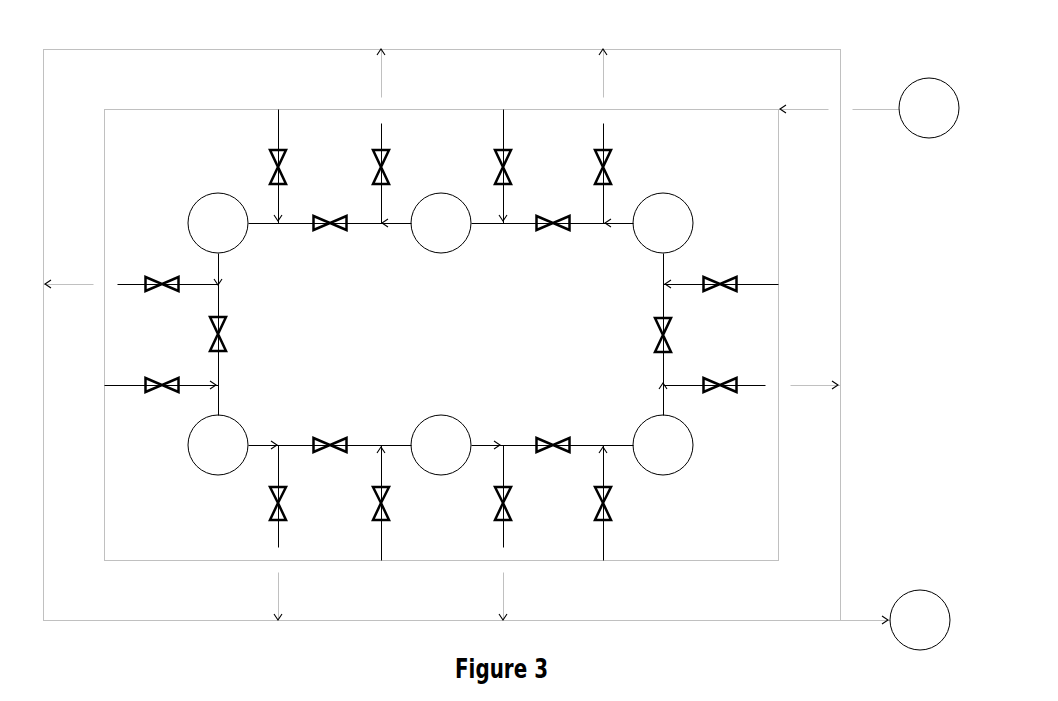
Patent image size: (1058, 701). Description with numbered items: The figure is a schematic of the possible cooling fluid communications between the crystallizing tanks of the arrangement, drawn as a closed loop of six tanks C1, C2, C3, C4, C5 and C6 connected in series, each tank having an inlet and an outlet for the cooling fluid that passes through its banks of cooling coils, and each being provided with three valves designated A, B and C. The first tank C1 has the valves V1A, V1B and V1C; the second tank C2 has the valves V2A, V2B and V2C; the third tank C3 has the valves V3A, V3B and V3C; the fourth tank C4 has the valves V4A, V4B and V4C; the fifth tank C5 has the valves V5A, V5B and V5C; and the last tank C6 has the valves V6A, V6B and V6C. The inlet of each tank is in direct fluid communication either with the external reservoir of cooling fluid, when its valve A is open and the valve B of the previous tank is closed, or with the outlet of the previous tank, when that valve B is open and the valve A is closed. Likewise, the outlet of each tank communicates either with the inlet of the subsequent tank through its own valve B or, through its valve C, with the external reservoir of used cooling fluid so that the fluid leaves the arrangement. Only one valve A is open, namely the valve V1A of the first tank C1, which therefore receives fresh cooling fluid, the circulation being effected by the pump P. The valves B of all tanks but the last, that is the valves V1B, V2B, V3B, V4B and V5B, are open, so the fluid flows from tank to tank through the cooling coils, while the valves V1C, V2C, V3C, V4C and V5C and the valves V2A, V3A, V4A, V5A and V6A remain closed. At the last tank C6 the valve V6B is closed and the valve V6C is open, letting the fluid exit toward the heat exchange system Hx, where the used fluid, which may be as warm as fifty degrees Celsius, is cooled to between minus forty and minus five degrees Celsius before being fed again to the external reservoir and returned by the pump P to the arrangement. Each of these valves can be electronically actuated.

The first crystallizing tank C1 is at (663, 223).
The second crystallizing tank C2 is at (441, 223).
The third crystallizing tank C3 is at (218, 223).
The fourth crystallizing tank C4 is at (218, 445).
The fifth crystallizing tank C5 is at (441, 445).
The last crystallizing tank C6 is at (663, 445).
The pump P is at (929, 108).
The heat exchange system Hx is at (920, 620).
The valve A of the first crystallizing tank V1A is at (720, 297).
The valve B of the first crystallizing tank V1B is at (553, 236).
The valve C of the first crystallizing tank V1C is at (622, 167).
The valve A of the second crystallizing tank V2A is at (521, 167).
The valve B of the second crystallizing tank V2B is at (330, 236).
The valve C of the second crystallizing tank V2C is at (399, 167).
The valve A of the third crystallizing tank V3A is at (296, 167).
The valve B of the third crystallizing tank V3B is at (238, 334).
The valve C of the third crystallizing tank V3C is at (162, 297).
The valve A of the fourth crystallizing tank V4A is at (162, 398).
The valve B of the fourth crystallizing tank V4B is at (330, 458).
The valve C of the fourth crystallizing tank V4C is at (298, 503).
The valve A of the fifth crystallizing tank V5A is at (400, 503).
The valve B of the fifth crystallizing tank V5B is at (553, 458).
The valve C of the fifth crystallizing tank V5C is at (522, 503).
The valve A of the last crystallizing tank V6A is at (622, 503).
The valve B of the last crystallizing tank V6B is at (683, 335).
The valve C of the last crystallizing tank V6C is at (720, 398).